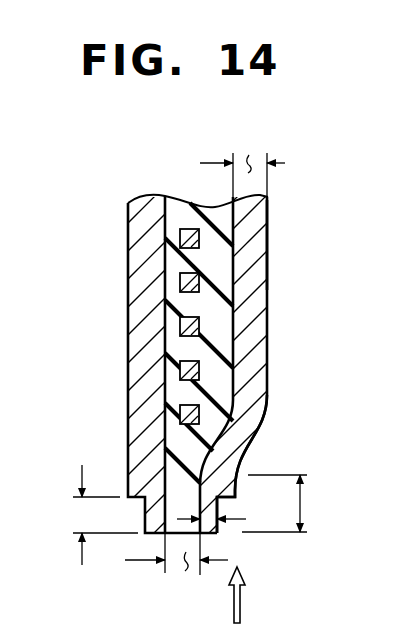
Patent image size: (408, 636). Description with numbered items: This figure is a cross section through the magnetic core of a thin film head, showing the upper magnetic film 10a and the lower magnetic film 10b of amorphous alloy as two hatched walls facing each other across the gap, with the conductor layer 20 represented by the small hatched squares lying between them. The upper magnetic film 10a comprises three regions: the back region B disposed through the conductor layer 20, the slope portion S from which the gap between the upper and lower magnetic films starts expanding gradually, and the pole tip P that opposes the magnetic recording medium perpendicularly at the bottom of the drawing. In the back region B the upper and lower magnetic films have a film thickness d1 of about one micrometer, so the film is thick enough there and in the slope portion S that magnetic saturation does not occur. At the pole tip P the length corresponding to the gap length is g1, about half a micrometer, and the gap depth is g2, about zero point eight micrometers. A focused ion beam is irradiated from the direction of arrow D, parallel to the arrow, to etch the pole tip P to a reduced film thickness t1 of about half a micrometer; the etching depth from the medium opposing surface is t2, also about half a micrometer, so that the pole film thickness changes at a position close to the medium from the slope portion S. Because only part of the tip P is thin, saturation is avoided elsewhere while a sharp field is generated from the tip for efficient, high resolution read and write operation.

The recessed grooves 20 is at (180, 250).
The upper magnetic film 10a is at (268, 337).
The inner wall portion 10b is at (127, 345).
The back region B is at (268, 238).
The slope portion S is at (267, 438).
The pole tip P is at (229, 506).
The arrow indicating FIB irradiation direction D is at (249, 596).
The film thickness of magnetic films in back region d1 is at (242, 156).
The length of pole tip corresponding to gap length g1 is at (176, 572).
The gap depth g2 is at (291, 503).
The film thickness of etched pole tip t1 is at (228, 522).
The etching depth from medium opposing surface t2 is at (92, 515).